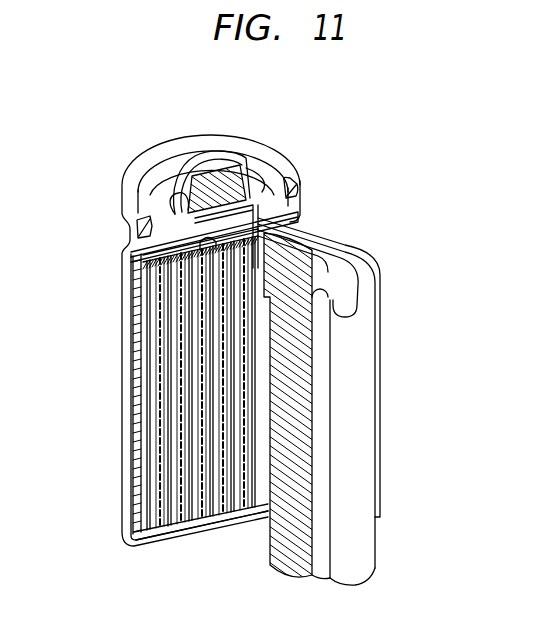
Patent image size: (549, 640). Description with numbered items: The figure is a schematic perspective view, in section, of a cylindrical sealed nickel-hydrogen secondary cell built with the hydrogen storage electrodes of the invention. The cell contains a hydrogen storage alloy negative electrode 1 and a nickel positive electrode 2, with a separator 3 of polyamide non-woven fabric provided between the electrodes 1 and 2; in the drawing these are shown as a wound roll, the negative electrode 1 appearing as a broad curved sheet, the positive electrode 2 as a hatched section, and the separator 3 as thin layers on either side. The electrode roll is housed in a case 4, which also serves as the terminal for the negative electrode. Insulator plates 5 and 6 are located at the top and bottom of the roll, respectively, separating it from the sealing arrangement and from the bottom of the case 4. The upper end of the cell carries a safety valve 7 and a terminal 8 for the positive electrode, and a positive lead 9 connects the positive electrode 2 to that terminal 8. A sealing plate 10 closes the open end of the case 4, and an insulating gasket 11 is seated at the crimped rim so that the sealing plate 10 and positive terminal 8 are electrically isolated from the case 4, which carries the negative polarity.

The hydrogen storage alloy negative electrode 1 is at (365, 543).
The nickel positive electrode 2 is at (286, 560).
The separator 3 is at (380, 263).
The case 4 is at (125, 457).
The insulator plate 5 is at (140, 252).
The insulator plate 6 is at (176, 540).
The safety valve 7 is at (230, 178).
The terminal for the positive electrode 8 is at (203, 157).
The positive lead 9 is at (252, 180).
The sealing plate 10 is at (257, 190).
The insulating gasket 11 is at (125, 227).